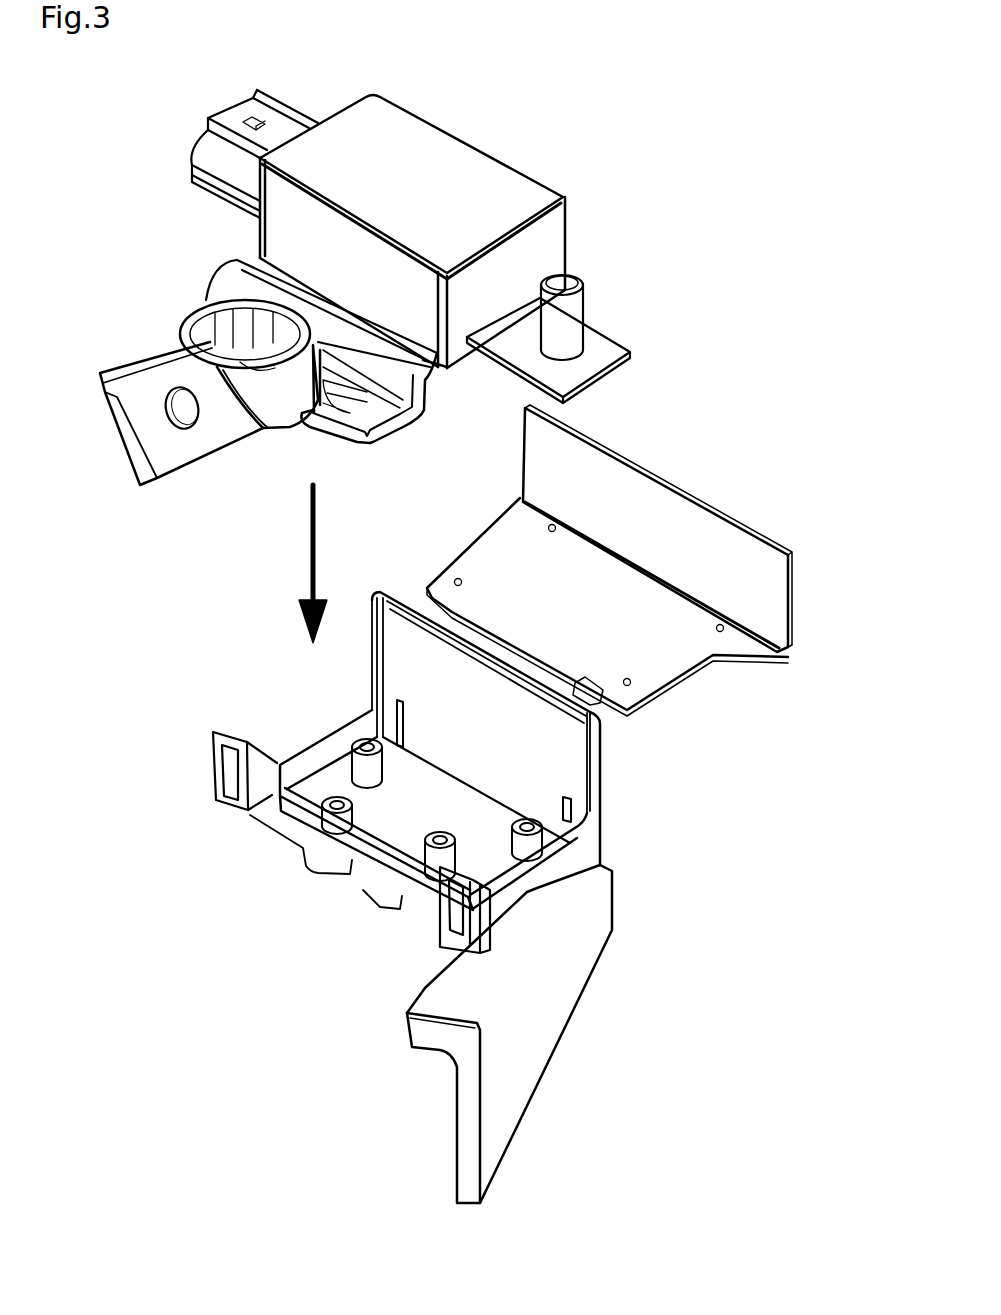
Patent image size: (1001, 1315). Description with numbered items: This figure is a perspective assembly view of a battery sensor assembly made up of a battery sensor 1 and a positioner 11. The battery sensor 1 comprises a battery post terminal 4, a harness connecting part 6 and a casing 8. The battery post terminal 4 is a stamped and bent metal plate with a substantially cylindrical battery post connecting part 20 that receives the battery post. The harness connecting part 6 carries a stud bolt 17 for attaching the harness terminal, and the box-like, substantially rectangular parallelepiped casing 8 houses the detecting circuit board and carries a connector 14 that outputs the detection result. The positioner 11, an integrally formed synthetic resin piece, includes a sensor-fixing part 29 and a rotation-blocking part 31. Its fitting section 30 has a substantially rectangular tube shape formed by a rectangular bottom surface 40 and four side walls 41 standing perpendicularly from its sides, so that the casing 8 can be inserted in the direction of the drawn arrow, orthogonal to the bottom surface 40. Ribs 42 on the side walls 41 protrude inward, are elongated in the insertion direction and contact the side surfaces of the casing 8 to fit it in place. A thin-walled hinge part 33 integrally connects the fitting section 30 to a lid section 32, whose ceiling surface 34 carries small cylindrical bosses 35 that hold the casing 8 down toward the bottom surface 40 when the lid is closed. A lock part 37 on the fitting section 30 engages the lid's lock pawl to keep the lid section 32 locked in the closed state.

The battery sensor 1 is at (550, 142).
The battery post terminal 4 is at (138, 253).
The harness connecting part 6 is at (603, 347).
The casing 8 is at (443, 160).
The positioner 11 is at (298, 960).
The connector 14 is at (217, 152).
The bolt 17 is at (568, 283).
The battery post connecting part 20 is at (275, 403).
The sensor-fixing part 29 is at (187, 587).
The fitting section 30 is at (260, 713).
The rotation-blocking part 31 is at (568, 975).
The lid section 32 is at (705, 695).
The hinge part 33 is at (523, 663).
The ceiling surface 34 is at (592, 593).
The bosses 35 is at (550, 530).
The lock part 37 is at (220, 760).
The bottom surface 40 is at (423, 800).
The side walls 41 is at (437, 677).
The ribs 42 is at (370, 713).